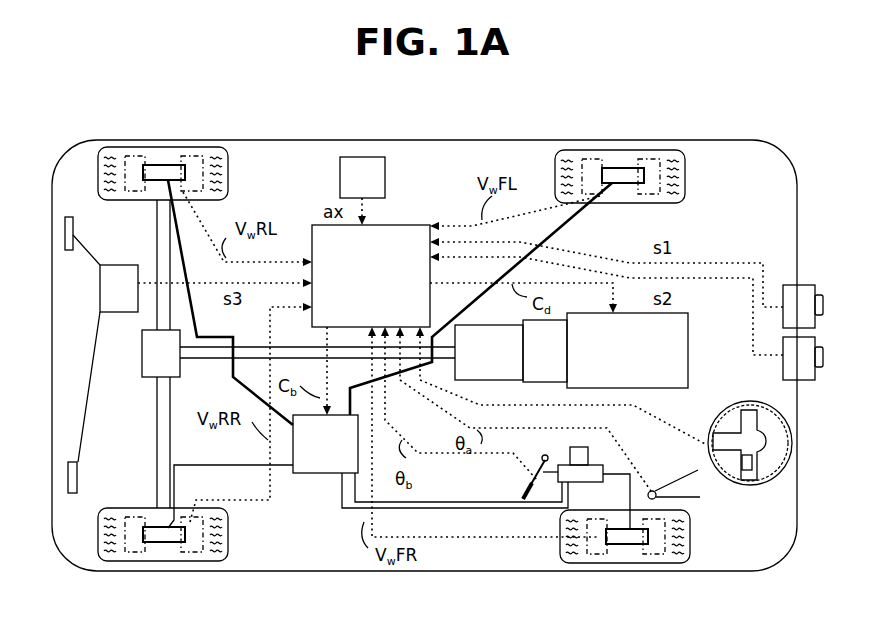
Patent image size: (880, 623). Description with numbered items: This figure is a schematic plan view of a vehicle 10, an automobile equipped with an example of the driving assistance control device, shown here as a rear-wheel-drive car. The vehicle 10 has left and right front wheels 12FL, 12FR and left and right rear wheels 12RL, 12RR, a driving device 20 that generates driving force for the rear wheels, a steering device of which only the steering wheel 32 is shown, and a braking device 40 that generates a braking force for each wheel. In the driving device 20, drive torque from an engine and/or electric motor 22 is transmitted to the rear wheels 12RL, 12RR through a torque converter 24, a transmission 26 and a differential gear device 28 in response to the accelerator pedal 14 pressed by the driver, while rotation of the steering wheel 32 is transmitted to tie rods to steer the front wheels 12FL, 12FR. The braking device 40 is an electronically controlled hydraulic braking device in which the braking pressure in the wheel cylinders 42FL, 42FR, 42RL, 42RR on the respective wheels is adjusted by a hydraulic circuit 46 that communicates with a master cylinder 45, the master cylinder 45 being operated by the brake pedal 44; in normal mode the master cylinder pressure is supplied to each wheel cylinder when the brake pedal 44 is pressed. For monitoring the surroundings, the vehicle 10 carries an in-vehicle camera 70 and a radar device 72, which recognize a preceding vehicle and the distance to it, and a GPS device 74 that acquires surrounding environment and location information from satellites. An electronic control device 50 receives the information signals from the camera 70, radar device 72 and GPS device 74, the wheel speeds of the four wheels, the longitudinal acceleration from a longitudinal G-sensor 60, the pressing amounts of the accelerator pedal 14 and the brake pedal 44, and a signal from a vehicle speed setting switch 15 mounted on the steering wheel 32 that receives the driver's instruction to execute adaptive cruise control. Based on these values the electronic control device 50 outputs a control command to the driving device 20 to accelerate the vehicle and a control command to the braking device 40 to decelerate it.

The vehicle 10 is at (447, 127).
The left rear wheel 12RL is at (98, 168).
The wheel cylinder 42RL is at (169, 165).
The left front wheel 12FL is at (658, 150).
The wheel cylinder 42FL is at (617, 167).
The right rear wheel 12RR is at (97, 549).
The wheel cylinder 42RR is at (162, 543).
The right front wheel 12FR is at (690, 548).
The wheel cylinder 42FR is at (624, 546).
The accelerator pedal 14 is at (658, 488).
The vehicle speed setting switch 15 is at (749, 482).
The driving device 20 is at (590, 342).
The engine and/or electric motor 22 is at (616, 360).
The torque converter 24 is at (534, 361).
The transmission 26 is at (478, 362).
The differential gear device 28 is at (150, 363).
The steering wheel 32 is at (750, 446).
The braking device 40 is at (401, 473).
The brake pedal 44 is at (533, 481).
The master cylinder 45 is at (600, 482).
The hydraulic circuit 46 is at (314, 454).
The electronic control device 50 is at (360, 286).
The longitudinal G-sensor 60 is at (362, 177).
The in-vehicle camera 70 is at (788, 316).
The radar device 72 is at (788, 368).
The GPS device 74 is at (108, 298).